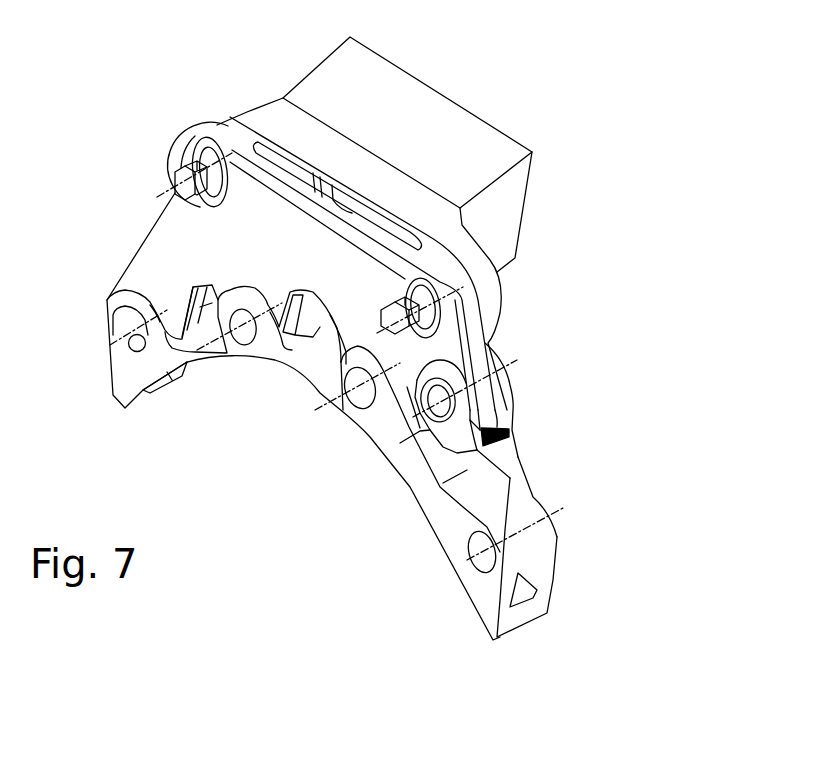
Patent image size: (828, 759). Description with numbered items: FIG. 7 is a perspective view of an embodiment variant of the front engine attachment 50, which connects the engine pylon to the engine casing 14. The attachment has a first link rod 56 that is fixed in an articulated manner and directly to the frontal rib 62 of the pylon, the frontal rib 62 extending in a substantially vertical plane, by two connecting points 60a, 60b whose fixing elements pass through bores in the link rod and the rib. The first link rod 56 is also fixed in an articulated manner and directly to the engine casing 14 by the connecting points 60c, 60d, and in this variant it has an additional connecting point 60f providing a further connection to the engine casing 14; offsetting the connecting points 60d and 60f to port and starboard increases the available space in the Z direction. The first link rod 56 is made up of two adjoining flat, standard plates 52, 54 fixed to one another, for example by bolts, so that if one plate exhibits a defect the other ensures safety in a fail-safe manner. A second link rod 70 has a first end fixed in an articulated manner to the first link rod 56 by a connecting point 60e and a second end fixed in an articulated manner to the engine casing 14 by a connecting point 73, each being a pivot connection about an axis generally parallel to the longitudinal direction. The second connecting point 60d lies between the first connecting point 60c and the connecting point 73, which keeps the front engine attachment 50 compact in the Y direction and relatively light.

The front engine attachment 50 is at (574, 125).
The plate 52 is at (241, 256).
The plate 54 is at (230, 126).
The first link rod 56 is at (225, 123).
The frontal rib 62 is at (381, 139).
The connecting point 60a is at (172, 168).
The connecting point 60b is at (462, 287).
The first connecting point 60c is at (125, 335).
The second connecting point 60d is at (228, 337).
The connecting point 60e is at (517, 362).
The additional connecting point 60f is at (345, 394).
The second link rod 70 is at (503, 465).
The connecting point 73 is at (480, 560).
The engine casing 14 is at (547, 577).